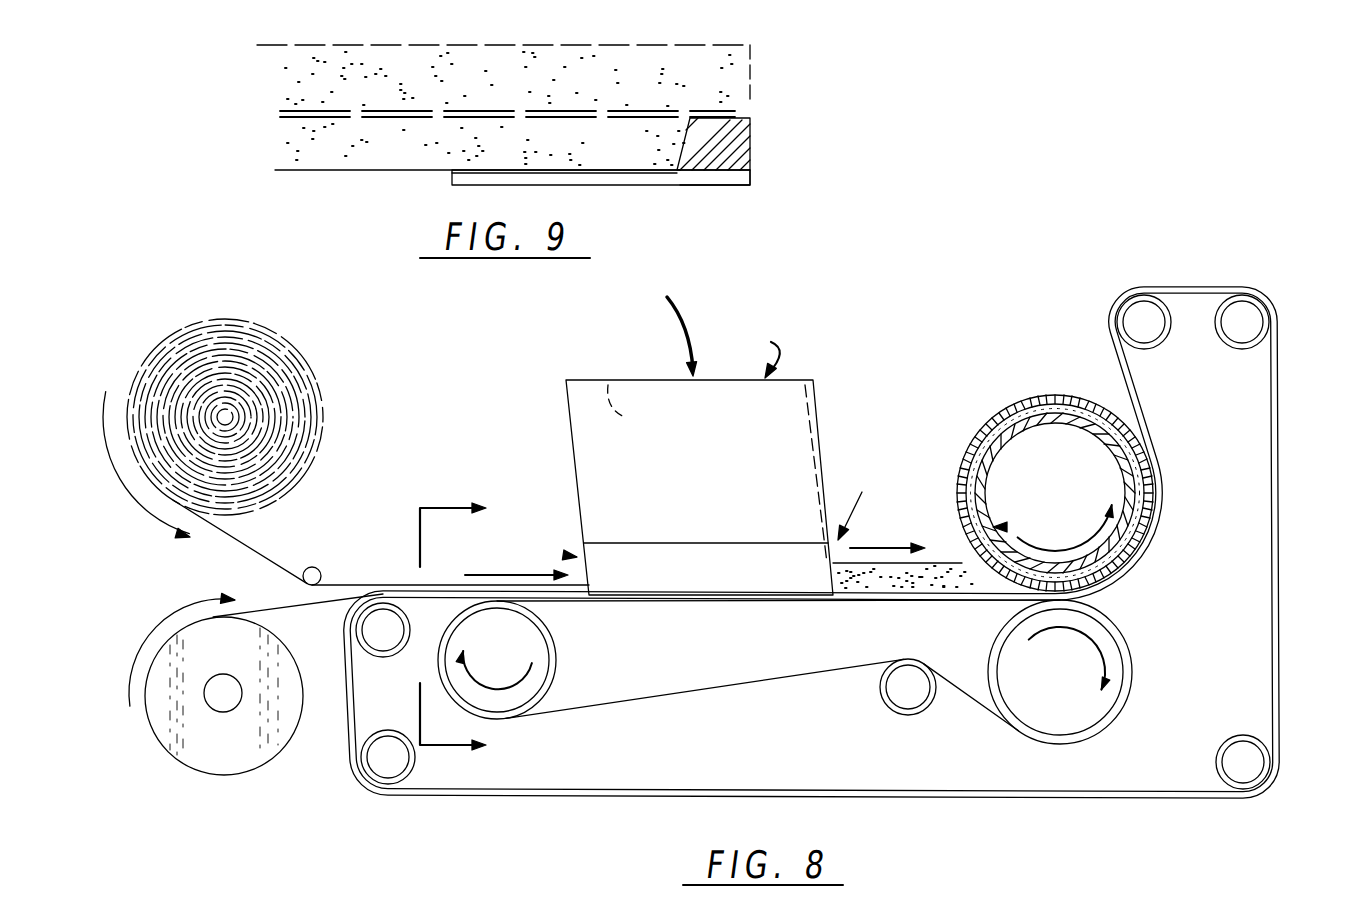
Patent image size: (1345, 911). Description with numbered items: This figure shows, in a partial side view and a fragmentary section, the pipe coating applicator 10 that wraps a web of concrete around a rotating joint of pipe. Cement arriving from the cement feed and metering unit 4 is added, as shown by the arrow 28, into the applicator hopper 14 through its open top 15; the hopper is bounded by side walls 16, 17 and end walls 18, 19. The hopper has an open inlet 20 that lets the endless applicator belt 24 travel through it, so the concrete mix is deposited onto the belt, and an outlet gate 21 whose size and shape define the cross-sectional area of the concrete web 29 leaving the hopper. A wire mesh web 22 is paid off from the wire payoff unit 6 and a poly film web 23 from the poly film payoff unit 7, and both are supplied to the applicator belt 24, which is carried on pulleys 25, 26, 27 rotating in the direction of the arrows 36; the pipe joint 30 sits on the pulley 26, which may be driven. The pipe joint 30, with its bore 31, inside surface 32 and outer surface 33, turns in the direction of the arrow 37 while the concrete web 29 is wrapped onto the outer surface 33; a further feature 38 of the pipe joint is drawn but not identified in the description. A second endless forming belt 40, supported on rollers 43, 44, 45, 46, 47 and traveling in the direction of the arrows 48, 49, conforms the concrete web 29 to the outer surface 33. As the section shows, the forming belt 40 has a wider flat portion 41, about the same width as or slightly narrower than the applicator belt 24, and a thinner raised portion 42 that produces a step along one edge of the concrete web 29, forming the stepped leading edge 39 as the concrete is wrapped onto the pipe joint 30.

In FIG. 8, the cement feed and metering unit 4 is at (470, 618).
In FIG. 8, the wire payoff unit 6 is at (205, 318).
In FIG. 8, the poly film payoff unit 7 is at (265, 773).
In FIG. 8, the applicator 10 is at (1208, 243).
In FIG. 8, the applicator hopper 14 is at (815, 380).
In FIG. 8, the open top 15 is at (760, 351).
In FIG. 8, the side wall 16 is at (708, 453).
In FIG. 8, the side wall 17 is at (612, 380).
In FIG. 8, the end wall 18 is at (570, 448).
In FIG. 8, the end wall 19 is at (820, 432).
In FIG. 8, the open inlet 20 is at (568, 555).
In FIG. 8, the outlet gate 21 is at (881, 505).
In FIG. 9, the wire mesh web 22 is at (463, 98).
In FIG. 8, the wire mesh web 22 is at (265, 553).
In FIG. 9, the poly film web 23 is at (370, 172).
In FIG. 8, the poly film web 23 is at (266, 612).
In FIG. 8, the endless applicator belt 24 is at (605, 708).
In FIG. 8, the pulley 25 is at (556, 650).
In FIG. 8, the pulley 26 is at (988, 652).
In FIG. 8, the pulley 27 is at (918, 715).
In FIG. 8, the arrow 28 is at (683, 314).
In FIG. 8, the concrete web 29 is at (948, 568).
In FIG. 8, the pipe joint 30 is at (1068, 430).
In FIG. 8, the bore 31 is at (1072, 508).
In FIG. 8, the inside surface 32 is at (1005, 527).
In FIG. 8, the outer surface 33 is at (1062, 395).
In FIG. 8, the arrows 36 is at (490, 692).
In FIG. 8, the arrow 37 is at (1135, 548).
In FIG. 8, the drum outer ring 38 is at (1020, 400).
In FIG. 9, the stepped leading edge 39 is at (740, 90).
In FIG. 8, the stepped leading edge 39 is at (978, 445).
In FIG. 9, the forming belt 40 is at (597, 185).
In FIG. 8, the forming belt 40 is at (818, 760).
In FIG. 9, the wider flat portion 41 is at (722, 185).
In FIG. 9, the thinner raised portion 42 is at (752, 130).
In FIG. 8, the roller 43 is at (400, 656).
In FIG. 8, the roller 44 is at (415, 765).
In FIG. 8, the roller 45 is at (1250, 735).
In FIG. 8, the roller 46 is at (1150, 350).
In FIG. 8, the roller 47 is at (1228, 350).
In FIG. 8, the arrow 48 is at (508, 574).
In FIG. 8, the arrow 49 is at (878, 548).